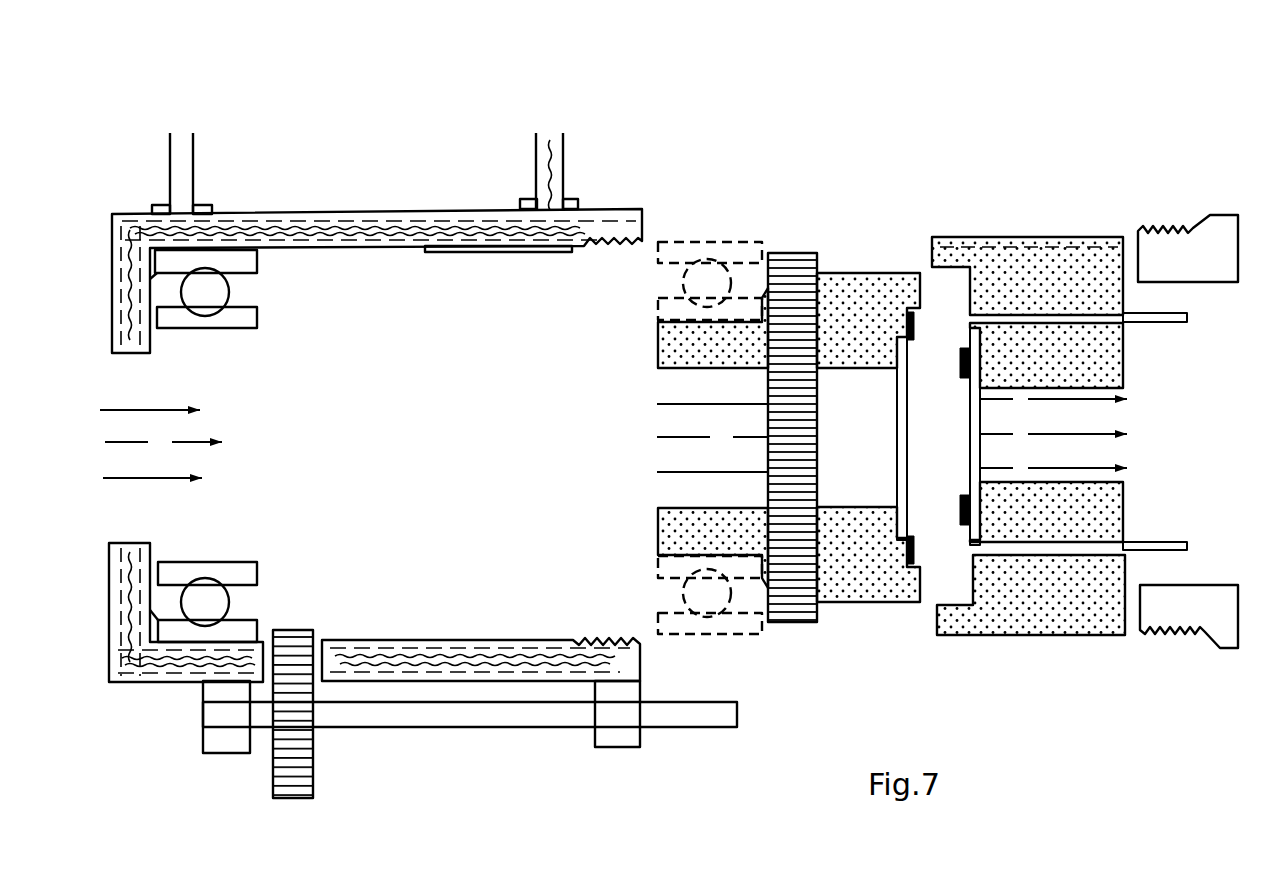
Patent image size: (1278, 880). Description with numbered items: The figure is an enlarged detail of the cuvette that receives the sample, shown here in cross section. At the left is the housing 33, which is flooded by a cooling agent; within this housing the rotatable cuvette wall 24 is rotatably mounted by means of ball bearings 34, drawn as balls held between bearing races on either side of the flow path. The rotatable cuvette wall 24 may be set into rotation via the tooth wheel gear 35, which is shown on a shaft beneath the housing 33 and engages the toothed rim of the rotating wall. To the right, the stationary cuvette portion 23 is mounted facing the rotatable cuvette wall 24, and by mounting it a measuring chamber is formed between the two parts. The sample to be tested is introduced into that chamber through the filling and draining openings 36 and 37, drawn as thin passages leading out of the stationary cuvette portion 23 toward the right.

The stationary cuvette portion 23 is at (1048, 268).
The rotatable cuvette wall 24 is at (858, 288).
The housing 33 is at (168, 675).
The ball bearings 34 is at (213, 293).
The tooth wheel gear 35 is at (300, 775).
The filling and draining opening 36 is at (1183, 547).
The filling and draining opening 37 is at (1180, 316).